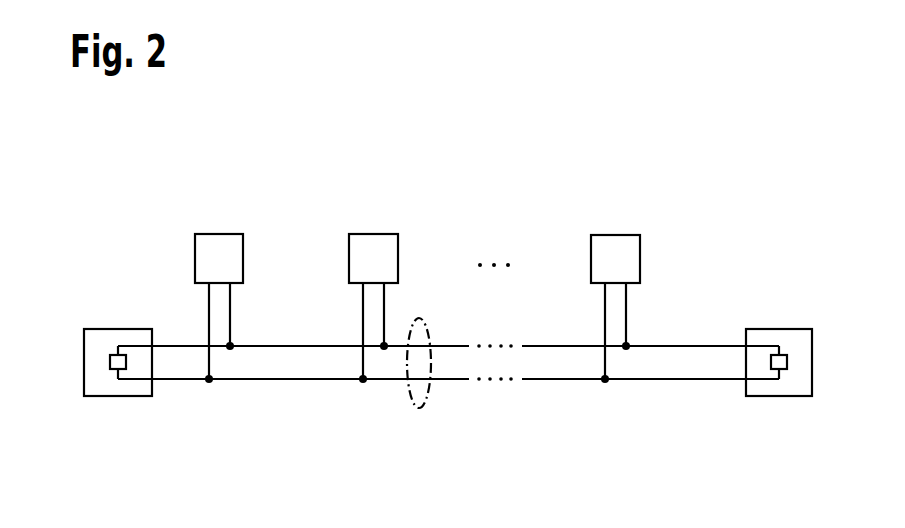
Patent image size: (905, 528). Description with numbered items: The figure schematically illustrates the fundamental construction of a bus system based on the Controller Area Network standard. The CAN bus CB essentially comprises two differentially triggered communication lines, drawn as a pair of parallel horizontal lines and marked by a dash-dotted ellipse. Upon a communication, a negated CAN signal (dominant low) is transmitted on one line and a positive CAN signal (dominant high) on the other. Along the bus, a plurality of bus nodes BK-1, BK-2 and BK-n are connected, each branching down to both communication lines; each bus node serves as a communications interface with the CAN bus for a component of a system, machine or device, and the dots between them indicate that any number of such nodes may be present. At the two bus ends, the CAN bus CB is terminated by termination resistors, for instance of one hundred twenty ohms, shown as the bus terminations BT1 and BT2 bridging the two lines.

The bus termination BT1 is at (120, 342).
The bus termination BT2 is at (780, 342).
The bus node BK-1 is at (219, 247).
The bus node BK-2 is at (374, 247).
The bus node BK-n is at (617, 248).
The CAN bus CB is at (428, 388).